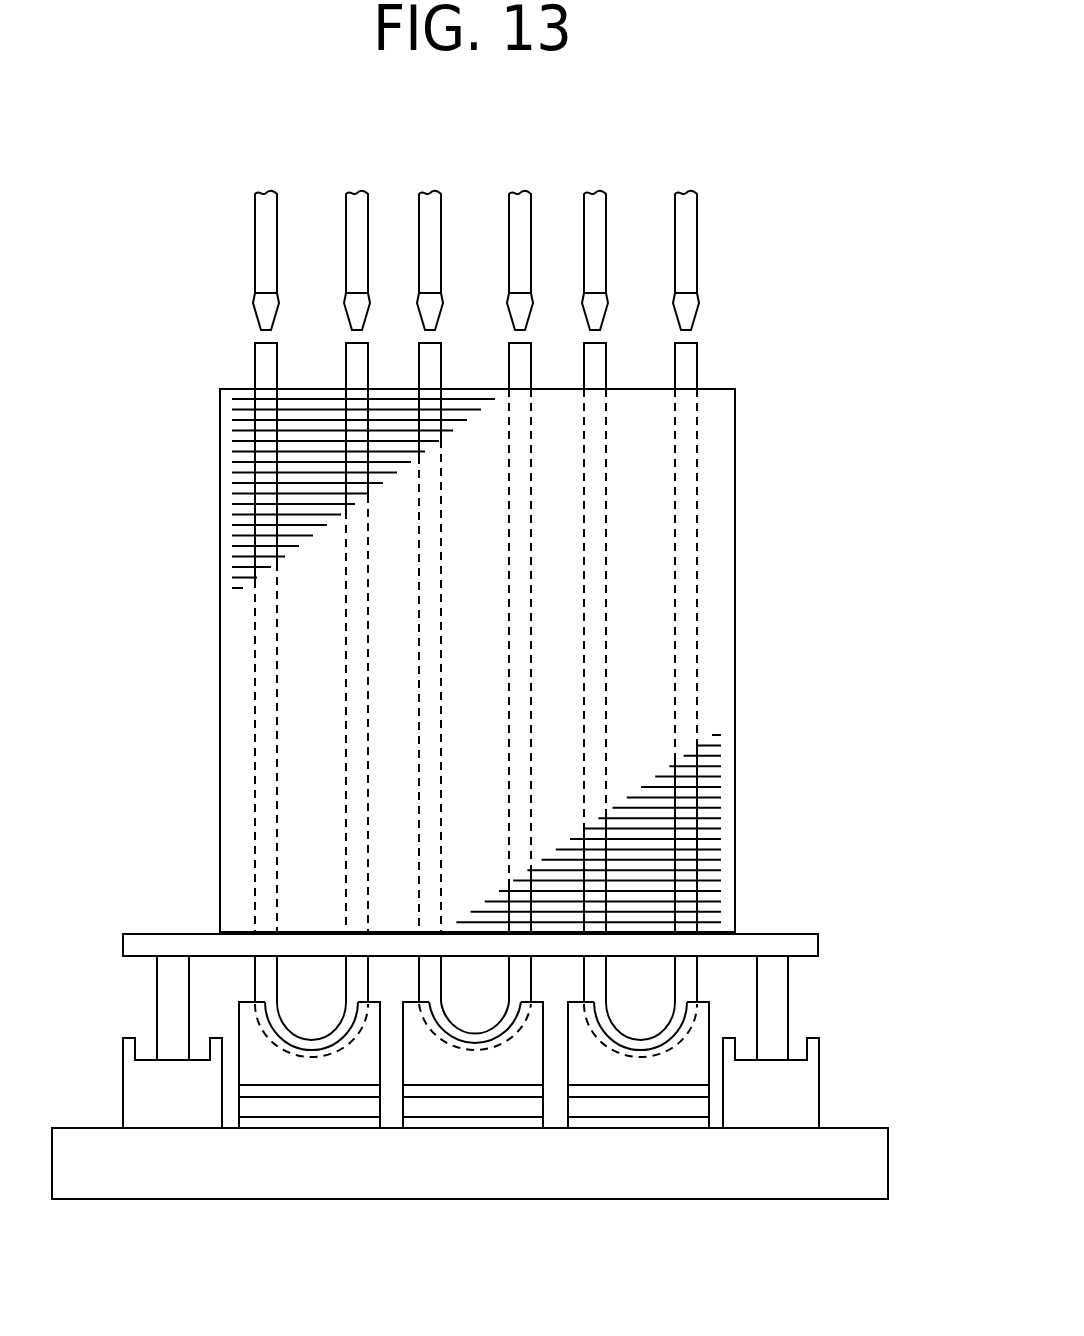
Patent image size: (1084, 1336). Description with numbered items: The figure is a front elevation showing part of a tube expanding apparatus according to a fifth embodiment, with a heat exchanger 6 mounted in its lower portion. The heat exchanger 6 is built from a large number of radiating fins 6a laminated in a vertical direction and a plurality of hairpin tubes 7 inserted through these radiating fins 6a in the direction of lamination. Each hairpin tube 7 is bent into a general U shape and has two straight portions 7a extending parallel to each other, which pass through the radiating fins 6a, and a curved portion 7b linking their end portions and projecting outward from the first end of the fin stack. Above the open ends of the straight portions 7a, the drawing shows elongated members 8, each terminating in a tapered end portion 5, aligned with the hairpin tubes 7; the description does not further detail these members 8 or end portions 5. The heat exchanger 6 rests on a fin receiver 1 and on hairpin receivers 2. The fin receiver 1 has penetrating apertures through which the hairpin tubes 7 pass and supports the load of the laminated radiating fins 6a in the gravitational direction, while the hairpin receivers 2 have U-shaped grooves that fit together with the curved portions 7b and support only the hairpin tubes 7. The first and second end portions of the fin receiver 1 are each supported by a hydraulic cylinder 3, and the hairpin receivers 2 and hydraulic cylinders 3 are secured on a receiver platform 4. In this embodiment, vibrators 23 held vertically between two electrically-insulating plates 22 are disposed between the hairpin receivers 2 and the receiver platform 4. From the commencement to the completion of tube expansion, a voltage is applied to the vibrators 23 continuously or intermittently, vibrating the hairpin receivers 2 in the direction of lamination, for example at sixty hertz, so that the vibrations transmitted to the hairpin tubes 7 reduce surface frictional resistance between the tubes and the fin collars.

The fin receiver 1 is at (818, 940).
The hairpin receiver 2 is at (678, 1065).
The hydraulic cylinder 3 is at (819, 1090).
The receiver platform 4 is at (888, 1158).
The contact tip 5 is at (698, 305).
The heat exchanger 6 is at (735, 497).
The radiating fin 6a is at (717, 806).
The hairpin tube 7 is at (698, 358).
The straight portion 7a is at (258, 641).
The curved portion 7b is at (307, 1055).
The probe pin 8 is at (698, 236).
The electrically-insulating plate 22 is at (727, 1215).
The vibrator 23 is at (642, 1100).